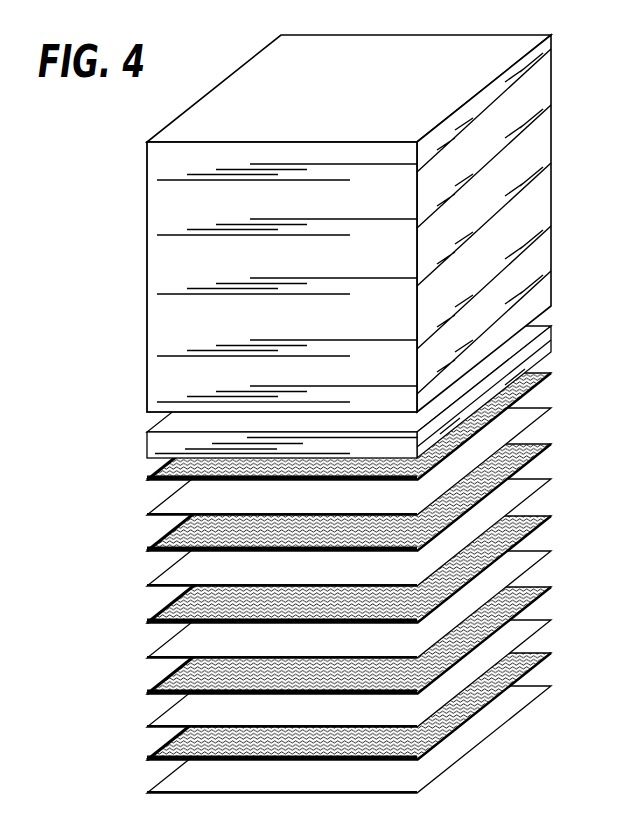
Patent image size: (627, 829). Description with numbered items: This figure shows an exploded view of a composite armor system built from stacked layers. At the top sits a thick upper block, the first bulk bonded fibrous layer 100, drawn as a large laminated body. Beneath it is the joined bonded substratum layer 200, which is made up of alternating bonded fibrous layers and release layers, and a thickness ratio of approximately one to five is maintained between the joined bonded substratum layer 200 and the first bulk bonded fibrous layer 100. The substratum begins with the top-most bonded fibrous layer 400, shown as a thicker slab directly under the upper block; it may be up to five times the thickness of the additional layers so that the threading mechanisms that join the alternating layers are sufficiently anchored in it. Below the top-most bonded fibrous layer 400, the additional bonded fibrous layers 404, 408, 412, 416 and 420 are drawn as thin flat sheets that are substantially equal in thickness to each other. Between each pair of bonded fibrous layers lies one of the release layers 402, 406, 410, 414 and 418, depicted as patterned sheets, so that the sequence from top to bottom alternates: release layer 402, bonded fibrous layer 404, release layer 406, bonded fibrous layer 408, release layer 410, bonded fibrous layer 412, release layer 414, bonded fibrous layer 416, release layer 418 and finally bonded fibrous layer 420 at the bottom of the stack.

The upper laminated stack 100 is at (132, 143).
The joined bonded substratum layer 200 is at (325, 579).
The top-most bonded fibrous layer 400 is at (551, 336).
The release layer 402 is at (551, 376).
The bonded fibrous layer 404 is at (551, 411).
The release layer 406 is at (551, 447).
The bonded fibrous layer 408 is at (551, 482).
The release layer 410 is at (551, 519).
The bonded fibrous layer 412 is at (551, 554).
The release layer 414 is at (551, 590).
The bonded fibrous layer 416 is at (551, 623).
The release layer 418 is at (551, 656).
The bonded fibrous layer 420 is at (551, 689).